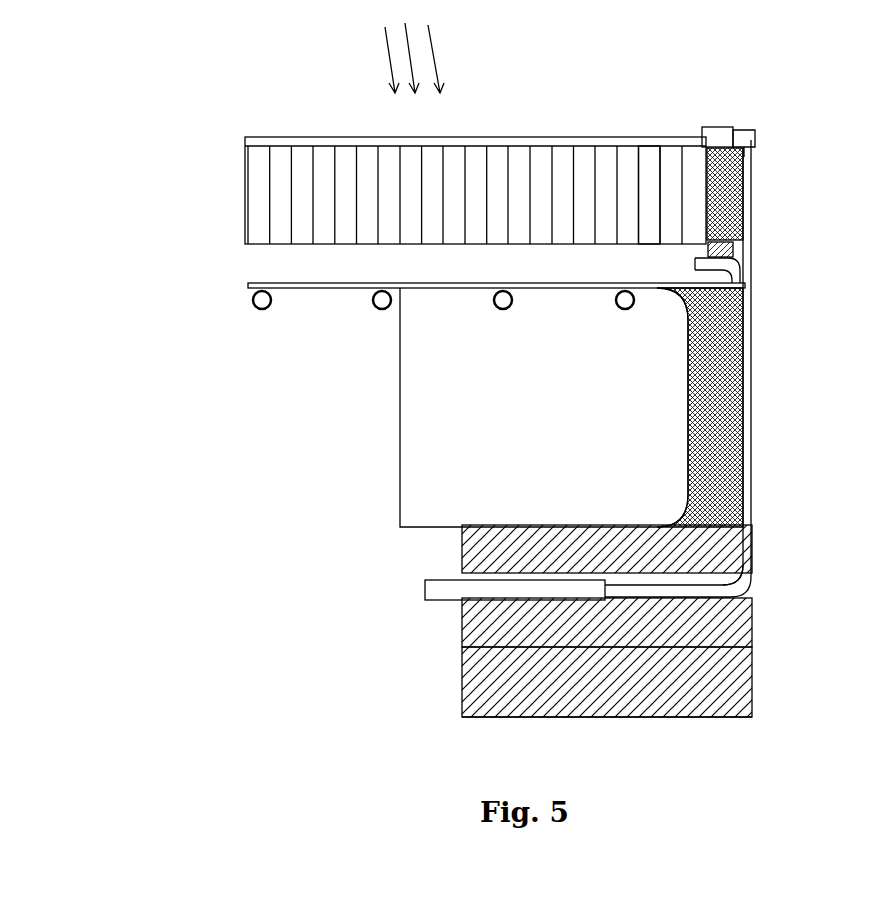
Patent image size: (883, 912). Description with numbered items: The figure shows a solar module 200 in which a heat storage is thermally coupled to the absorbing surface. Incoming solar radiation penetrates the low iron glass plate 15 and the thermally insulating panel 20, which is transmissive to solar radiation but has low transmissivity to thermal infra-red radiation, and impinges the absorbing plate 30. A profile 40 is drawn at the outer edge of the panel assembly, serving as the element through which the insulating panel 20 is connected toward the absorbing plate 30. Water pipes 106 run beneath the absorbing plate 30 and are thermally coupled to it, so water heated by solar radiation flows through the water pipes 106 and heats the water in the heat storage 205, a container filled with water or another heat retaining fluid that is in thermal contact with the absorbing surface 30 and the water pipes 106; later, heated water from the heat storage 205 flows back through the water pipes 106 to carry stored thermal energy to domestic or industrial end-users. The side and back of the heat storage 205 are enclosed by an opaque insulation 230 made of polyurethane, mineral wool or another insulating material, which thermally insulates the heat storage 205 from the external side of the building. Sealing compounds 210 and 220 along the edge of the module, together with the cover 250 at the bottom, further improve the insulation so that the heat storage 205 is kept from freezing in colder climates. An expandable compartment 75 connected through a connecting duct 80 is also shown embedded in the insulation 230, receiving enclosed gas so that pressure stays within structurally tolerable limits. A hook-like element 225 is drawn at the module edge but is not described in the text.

The low iron glass plate 15 is at (622, 136).
The thermally insulating panel 20 is at (647, 173).
The absorbing plate 30 is at (400, 284).
The profile 40 is at (755, 128).
The expandable compartment 75 is at (423, 589).
The connecting duct 80 is at (752, 567).
The water pipes 106 is at (490, 297).
The solar module 200 is at (146, 167).
The heat storage 205 is at (398, 407).
The sealing compound 210 is at (730, 145).
The sealing compound 220 is at (730, 247).
The hook 225 is at (733, 257).
The opaque insulation 230 is at (723, 152).
The cover 250 is at (740, 717).